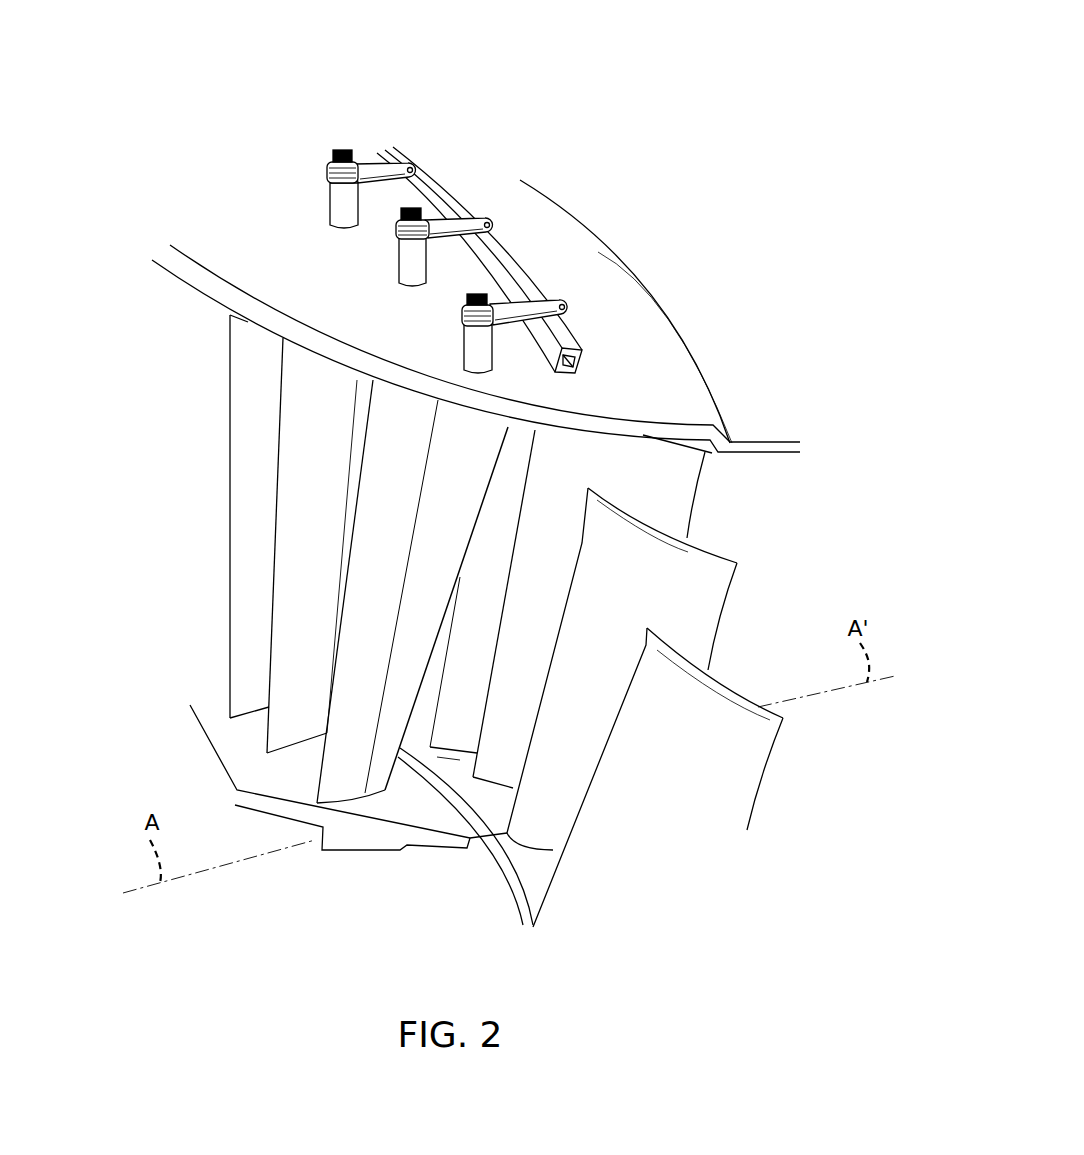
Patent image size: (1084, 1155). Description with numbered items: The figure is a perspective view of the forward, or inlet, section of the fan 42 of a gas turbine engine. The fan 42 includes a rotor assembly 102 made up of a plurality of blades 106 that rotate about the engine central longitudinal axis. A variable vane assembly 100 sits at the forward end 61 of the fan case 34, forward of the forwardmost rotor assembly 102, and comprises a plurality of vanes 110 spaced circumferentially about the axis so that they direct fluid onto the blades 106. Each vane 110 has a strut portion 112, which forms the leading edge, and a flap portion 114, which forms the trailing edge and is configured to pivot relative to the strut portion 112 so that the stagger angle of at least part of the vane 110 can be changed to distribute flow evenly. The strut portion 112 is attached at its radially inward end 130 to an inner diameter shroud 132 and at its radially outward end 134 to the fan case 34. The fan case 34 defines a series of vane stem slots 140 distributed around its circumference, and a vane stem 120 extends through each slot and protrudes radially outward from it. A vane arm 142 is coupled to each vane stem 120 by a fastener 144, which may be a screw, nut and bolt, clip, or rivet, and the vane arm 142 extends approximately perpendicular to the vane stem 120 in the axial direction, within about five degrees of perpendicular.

The fan 42 is at (231, 121).
The forward end 61 is at (175, 265).
The fan case 34 is at (608, 307).
The variable vane assembly 100 is at (187, 448).
The rotor assembly 102 is at (756, 522).
The blades 106 is at (675, 488).
The vanes 110 is at (262, 357).
The strut portion 112 is at (240, 418).
The flap portion 114 is at (370, 397).
The vane stem 120 is at (340, 205).
The radially inward end 130 is at (245, 708).
The inner diameter shroud 132 is at (243, 758).
The radially outward end 134 is at (242, 326).
The vane stem slots 140 is at (391, 265).
The vane arm 142 is at (448, 228).
The fastener 144 is at (340, 150).